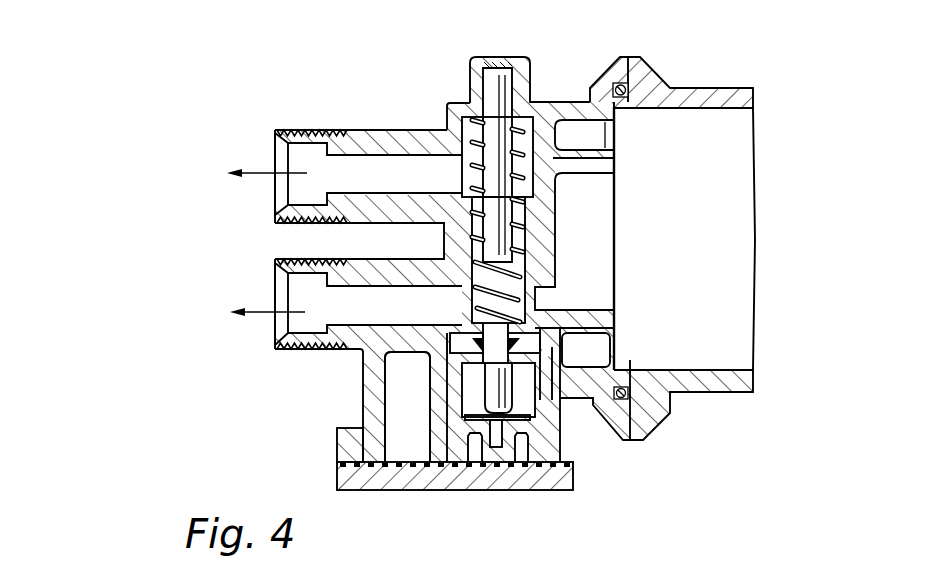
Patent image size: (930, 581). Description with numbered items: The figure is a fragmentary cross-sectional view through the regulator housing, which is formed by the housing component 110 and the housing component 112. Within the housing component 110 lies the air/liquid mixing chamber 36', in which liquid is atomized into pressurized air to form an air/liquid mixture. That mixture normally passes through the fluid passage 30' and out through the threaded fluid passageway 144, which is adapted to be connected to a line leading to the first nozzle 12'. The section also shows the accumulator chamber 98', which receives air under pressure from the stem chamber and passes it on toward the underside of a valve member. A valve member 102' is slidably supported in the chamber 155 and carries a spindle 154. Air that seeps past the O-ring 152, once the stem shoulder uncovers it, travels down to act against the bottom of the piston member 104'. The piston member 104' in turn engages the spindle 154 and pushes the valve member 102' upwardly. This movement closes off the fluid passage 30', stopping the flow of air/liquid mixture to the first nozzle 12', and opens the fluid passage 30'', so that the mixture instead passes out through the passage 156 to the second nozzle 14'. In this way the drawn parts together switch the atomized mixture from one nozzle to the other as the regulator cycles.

The first nozzle 12' is at (248, 171).
The second nozzle 14' is at (251, 306).
The fluid passage 30' is at (606, 168).
The fluid passage 30'' is at (599, 241).
The air/liquid mixing chamber 36' is at (720, 238).
The accumulator chamber 98' is at (367, 407).
The valve member 102' is at (603, 298).
The piston member 104' is at (497, 474).
The housing component 110 is at (712, 87).
The housing component 112 is at (560, 102).
The fluid passageway 144 is at (368, 156).
The O-ring 152 is at (513, 442).
The spindle 154 is at (507, 383).
The chamber 155 is at (612, 137).
The passage 156 is at (375, 292).